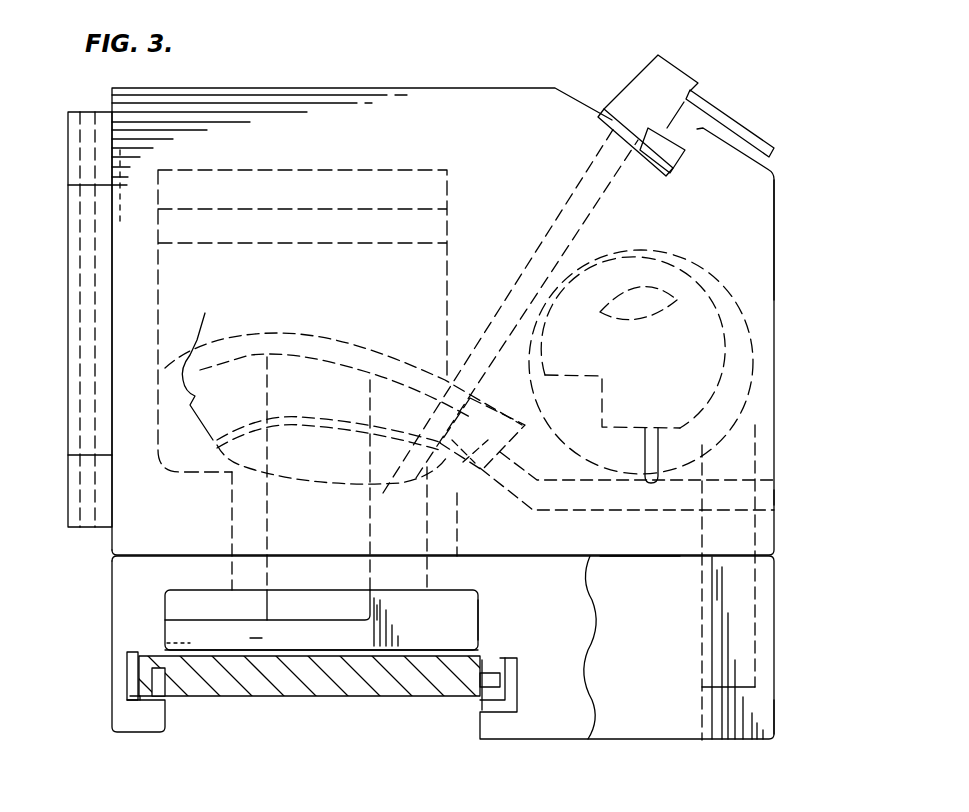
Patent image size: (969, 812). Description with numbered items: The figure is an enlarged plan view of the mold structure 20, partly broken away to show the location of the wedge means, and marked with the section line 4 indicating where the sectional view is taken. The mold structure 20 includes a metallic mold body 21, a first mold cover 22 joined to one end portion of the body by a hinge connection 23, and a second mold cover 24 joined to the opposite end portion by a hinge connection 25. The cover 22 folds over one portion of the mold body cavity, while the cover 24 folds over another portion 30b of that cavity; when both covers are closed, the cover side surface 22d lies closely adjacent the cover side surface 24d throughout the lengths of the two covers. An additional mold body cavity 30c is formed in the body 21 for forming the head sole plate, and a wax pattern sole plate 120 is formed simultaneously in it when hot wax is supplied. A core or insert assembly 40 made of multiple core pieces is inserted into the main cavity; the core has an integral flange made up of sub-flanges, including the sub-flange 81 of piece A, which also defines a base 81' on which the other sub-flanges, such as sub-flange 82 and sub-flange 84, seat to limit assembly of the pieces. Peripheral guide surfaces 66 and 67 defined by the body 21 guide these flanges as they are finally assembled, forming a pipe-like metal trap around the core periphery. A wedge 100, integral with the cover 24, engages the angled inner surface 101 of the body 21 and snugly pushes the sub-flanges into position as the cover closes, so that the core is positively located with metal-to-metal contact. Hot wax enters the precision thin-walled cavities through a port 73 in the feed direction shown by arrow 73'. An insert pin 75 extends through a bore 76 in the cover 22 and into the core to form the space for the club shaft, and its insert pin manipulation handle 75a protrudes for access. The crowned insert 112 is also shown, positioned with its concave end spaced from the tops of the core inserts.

The mold structure 20 is at (493, 88).
The mold body 21 is at (518, 730).
The first mold cover 22 is at (774, 233).
The cover side surface 22d is at (528, 561).
The hinge connection 23 is at (68, 131).
The second mold cover 24 is at (776, 722).
The cover side surface 24d is at (642, 548).
The hinge connection 25 is at (757, 643).
The mold body cavity portion 30b is at (237, 564).
The additional mold body cavity 30c is at (722, 350).
The core or insert assembly 40 is at (337, 372).
The peripheral guide surface 66 is at (163, 636).
The peripheral guide surface 67 is at (473, 622).
The port 73 is at (768, 573).
The feed direction arrow 73' is at (828, 531).
The insert pin 75 is at (562, 217).
The insert pin manipulation handle 75a is at (733, 115).
The bore 76 is at (598, 165).
The sub-flange 81 is at (406, 622).
The base 81' is at (228, 696).
The sub-flange 82 is at (178, 601).
The sub-flange 84 is at (315, 597).
The wedge 100 is at (316, 690).
The angled inner surface 101 is at (120, 707).
The crowned insert 112 is at (327, 258).
The wax pattern sole plate 120 is at (204, 330).
The section line 4 is at (319, 117).